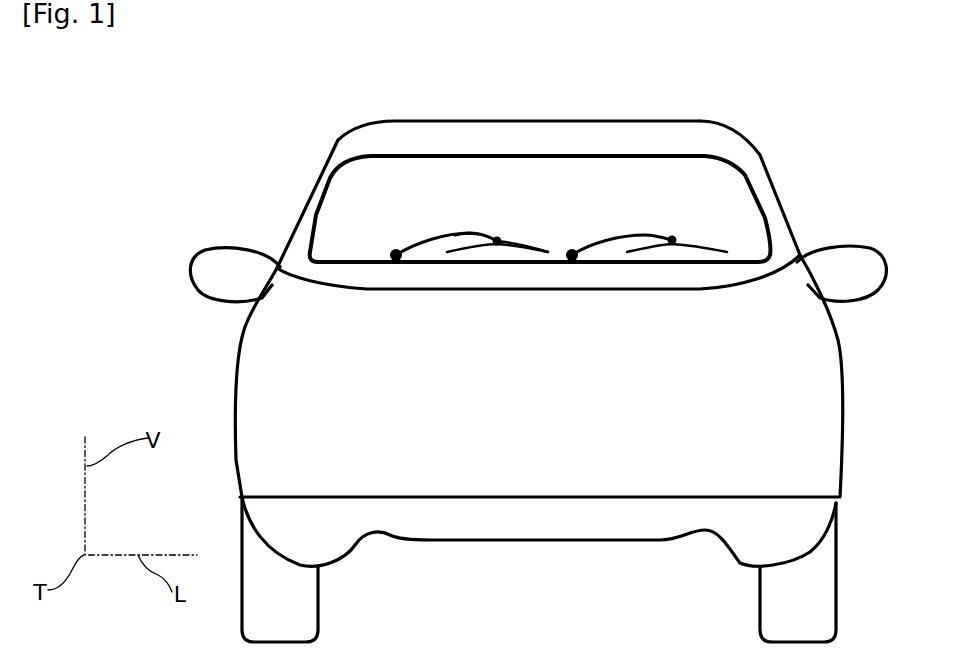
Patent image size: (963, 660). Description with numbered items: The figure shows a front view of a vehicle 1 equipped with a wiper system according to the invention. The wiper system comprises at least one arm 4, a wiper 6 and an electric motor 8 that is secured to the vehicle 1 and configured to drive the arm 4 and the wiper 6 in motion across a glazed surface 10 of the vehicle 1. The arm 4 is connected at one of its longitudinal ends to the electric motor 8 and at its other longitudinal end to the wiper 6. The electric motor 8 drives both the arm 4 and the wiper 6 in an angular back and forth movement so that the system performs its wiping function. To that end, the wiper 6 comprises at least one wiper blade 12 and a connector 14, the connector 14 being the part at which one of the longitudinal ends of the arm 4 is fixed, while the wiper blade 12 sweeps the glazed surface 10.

The vehicle 1 is at (252, 195).
The arm 4 is at (472, 233).
The wiper 6 is at (532, 78).
The electric motor 8 is at (394, 248).
The glazed surface 10 is at (733, 211).
The wiper blade 12 is at (535, 246).
The connector 14 is at (498, 237).